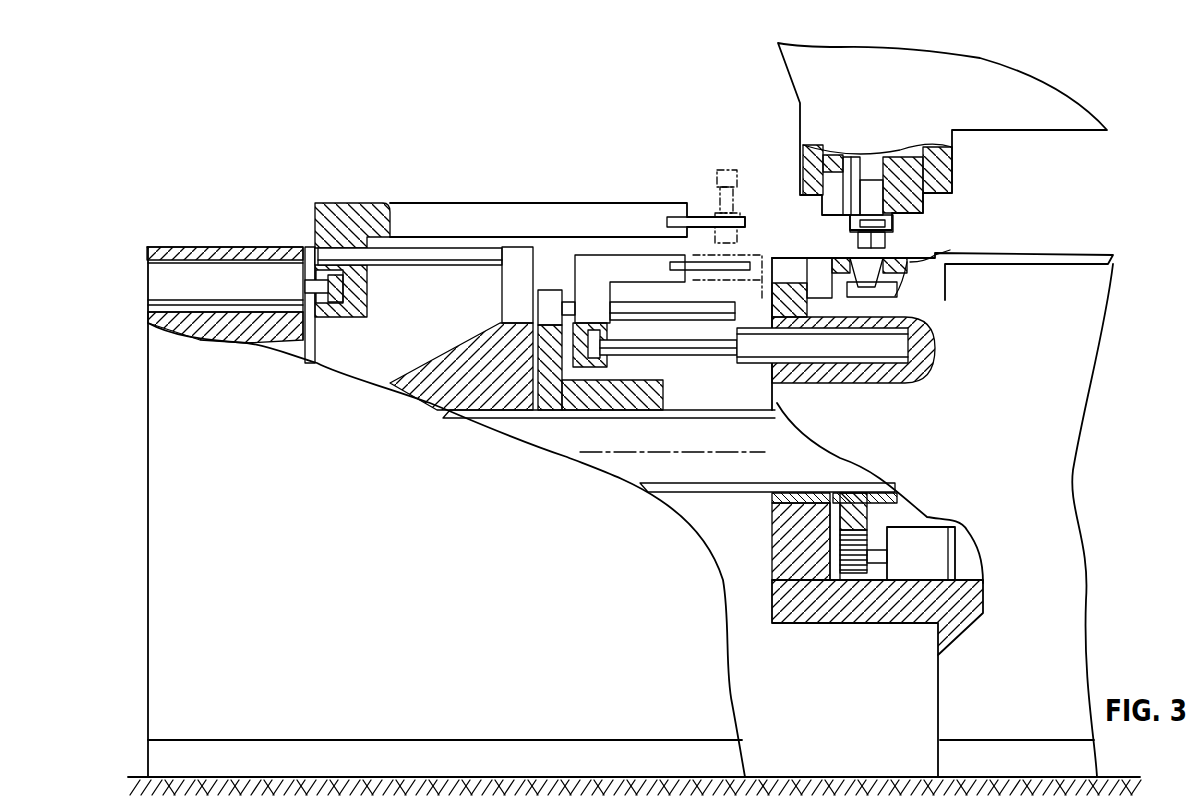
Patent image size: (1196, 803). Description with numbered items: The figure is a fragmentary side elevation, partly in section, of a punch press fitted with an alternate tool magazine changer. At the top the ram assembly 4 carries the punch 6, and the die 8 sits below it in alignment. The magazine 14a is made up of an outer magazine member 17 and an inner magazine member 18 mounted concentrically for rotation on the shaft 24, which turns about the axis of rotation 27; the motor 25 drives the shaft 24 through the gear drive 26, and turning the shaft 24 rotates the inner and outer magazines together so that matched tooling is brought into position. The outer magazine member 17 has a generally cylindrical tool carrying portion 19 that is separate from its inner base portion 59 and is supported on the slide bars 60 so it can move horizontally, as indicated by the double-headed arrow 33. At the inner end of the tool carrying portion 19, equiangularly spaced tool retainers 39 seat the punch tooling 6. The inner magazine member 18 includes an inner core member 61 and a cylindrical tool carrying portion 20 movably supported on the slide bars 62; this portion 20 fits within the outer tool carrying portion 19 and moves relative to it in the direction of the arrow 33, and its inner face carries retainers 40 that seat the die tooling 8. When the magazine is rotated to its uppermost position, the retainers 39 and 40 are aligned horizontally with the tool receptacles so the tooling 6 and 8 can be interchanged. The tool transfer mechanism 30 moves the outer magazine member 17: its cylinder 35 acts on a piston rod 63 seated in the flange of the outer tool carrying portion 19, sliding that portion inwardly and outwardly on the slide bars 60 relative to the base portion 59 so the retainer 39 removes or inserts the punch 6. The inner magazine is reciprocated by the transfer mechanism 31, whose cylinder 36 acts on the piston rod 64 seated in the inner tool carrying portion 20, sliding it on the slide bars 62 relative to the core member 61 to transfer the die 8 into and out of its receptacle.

The ram assembly 4 is at (912, 182).
The punch 6 is at (718, 200).
The die 8 is at (757, 258).
The magazine 14a is at (363, 194).
The outer magazine member 17 is at (487, 383).
The inner magazine member 18 is at (582, 403).
The tool carrying portion 19 is at (497, 215).
The tool carrying portion 20 is at (608, 268).
The shaft 24 is at (760, 437).
The motor 25 is at (940, 543).
The gear drive 26 is at (878, 528).
The axis of rotation 27 is at (727, 450).
The tool transfer mechanism 30 is at (309, 372).
The transfer mechanism 31 is at (721, 372).
The double-headed arrow 33 is at (492, 288).
The cylinder 35 is at (160, 278).
The cylinder 36 is at (890, 343).
The tool retainers 39 is at (700, 216).
The retainers 40 is at (695, 282).
The inner base portion 59 is at (412, 378).
The slide bars 60 is at (443, 248).
The inner core member 61 is at (607, 400).
The slide bars 62 is at (645, 305).
The piston rod 63 is at (316, 272).
The piston rod 64 is at (686, 356).